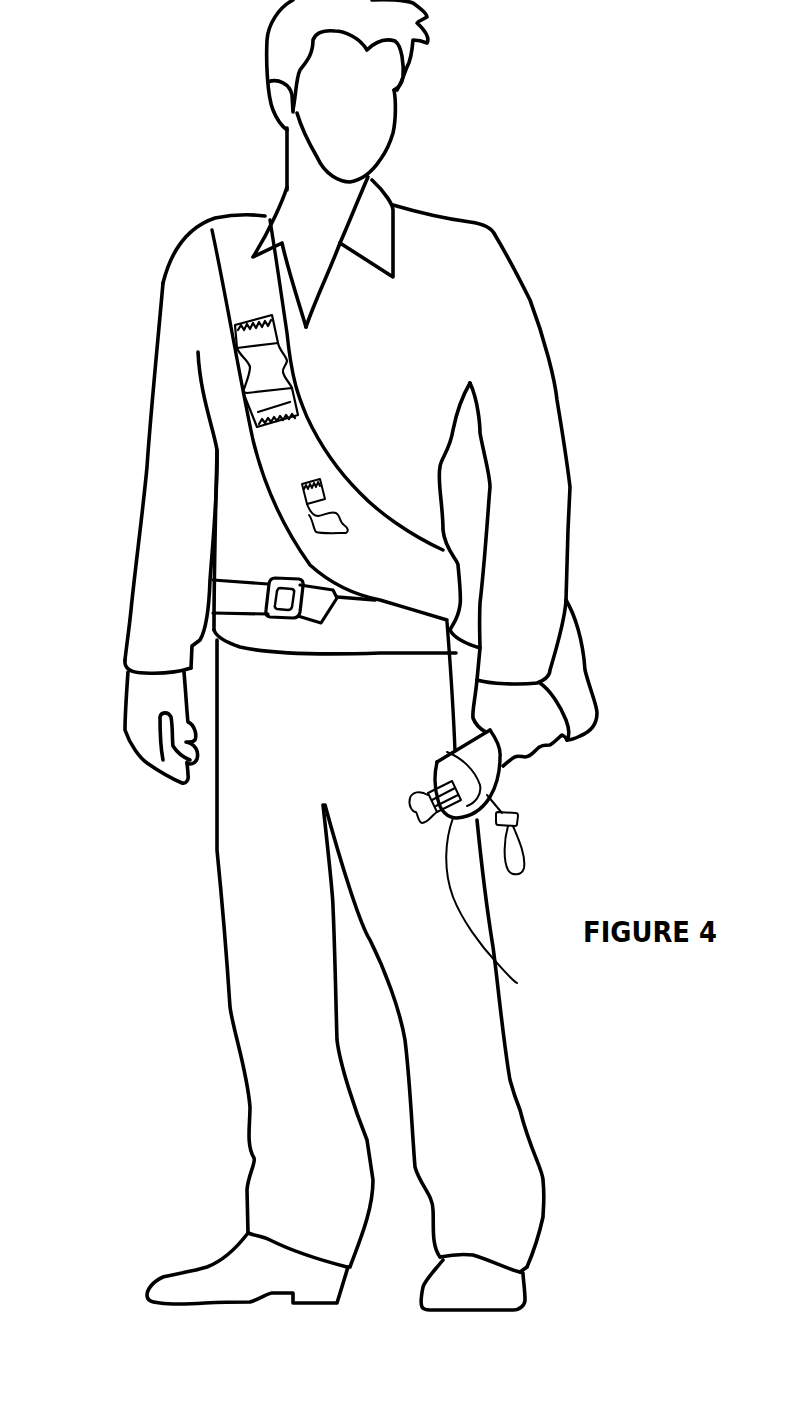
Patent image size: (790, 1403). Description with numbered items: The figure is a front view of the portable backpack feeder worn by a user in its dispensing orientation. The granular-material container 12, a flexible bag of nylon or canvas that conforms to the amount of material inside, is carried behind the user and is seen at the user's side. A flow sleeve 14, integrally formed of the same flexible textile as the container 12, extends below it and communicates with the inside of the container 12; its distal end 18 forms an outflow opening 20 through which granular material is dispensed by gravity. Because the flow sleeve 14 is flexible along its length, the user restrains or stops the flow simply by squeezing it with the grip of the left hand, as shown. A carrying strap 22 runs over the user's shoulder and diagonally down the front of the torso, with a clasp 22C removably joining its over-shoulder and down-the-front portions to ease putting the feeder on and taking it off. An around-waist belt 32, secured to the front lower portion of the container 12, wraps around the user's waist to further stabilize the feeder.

The granular-material container 12 is at (465, 437).
The flow sleeve 14 is at (567, 657).
The distal end 18 is at (492, 768).
The outflow opening 20 is at (501, 899).
The carrying strap 22 is at (283, 463).
The clasp 22C is at (260, 358).
The around-waist belt 32 is at (217, 590).